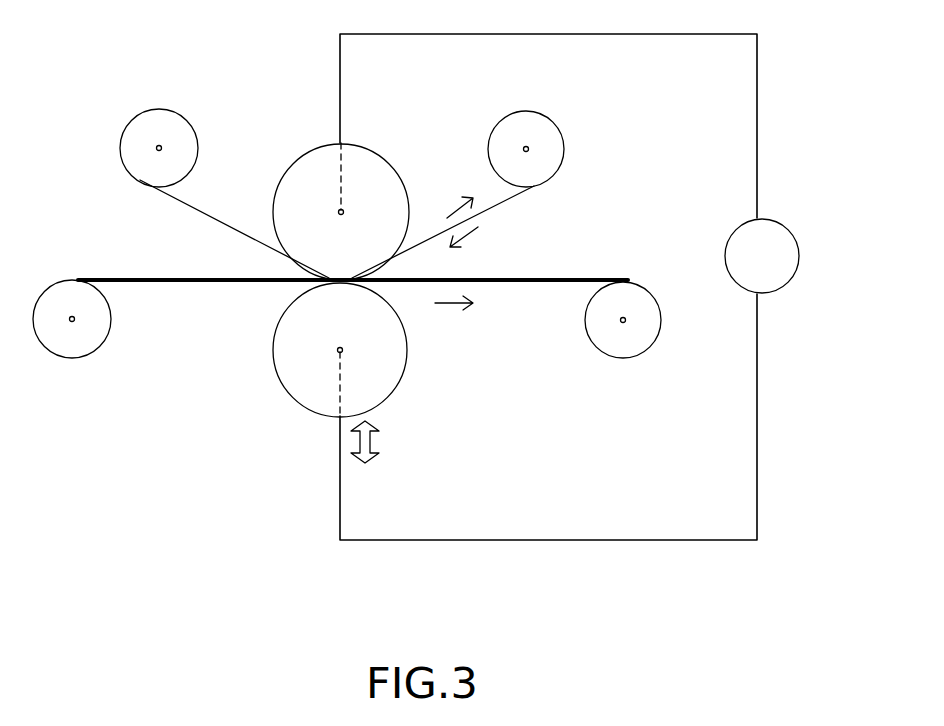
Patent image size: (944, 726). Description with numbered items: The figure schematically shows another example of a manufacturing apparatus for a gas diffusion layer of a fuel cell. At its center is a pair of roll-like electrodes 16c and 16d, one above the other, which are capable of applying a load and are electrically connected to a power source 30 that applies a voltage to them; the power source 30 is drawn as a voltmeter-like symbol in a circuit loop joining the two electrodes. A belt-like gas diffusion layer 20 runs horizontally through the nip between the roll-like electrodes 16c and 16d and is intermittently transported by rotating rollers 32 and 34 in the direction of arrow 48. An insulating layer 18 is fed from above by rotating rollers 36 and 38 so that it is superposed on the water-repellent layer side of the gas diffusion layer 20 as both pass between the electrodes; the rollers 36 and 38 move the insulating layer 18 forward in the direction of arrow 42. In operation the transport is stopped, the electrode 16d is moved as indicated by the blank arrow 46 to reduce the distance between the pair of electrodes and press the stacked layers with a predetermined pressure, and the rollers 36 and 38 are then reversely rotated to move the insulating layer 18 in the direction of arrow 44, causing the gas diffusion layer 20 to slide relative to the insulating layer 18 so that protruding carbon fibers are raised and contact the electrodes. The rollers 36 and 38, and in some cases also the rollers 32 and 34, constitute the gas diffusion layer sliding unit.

The roll-like electrode 16c is at (300, 158).
The roll-like electrode 16d is at (296, 400).
The insulating layer 18 is at (512, 197).
The gas diffusion layer 20 is at (205, 282).
The power source 30 is at (790, 232).
The rotating roller 32 is at (72, 358).
The rotating roller 34 is at (615, 357).
The rotating roller 36 is at (136, 117).
The rotating roller 38 is at (556, 126).
The arrow 42 is at (457, 204).
The arrow 44 is at (461, 241).
The blank arrow 46 is at (374, 440).
The arrow 48 is at (462, 306).